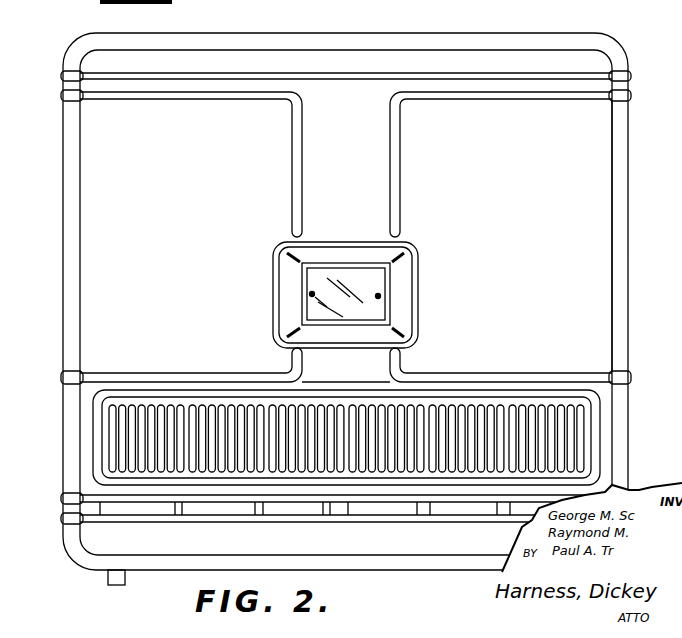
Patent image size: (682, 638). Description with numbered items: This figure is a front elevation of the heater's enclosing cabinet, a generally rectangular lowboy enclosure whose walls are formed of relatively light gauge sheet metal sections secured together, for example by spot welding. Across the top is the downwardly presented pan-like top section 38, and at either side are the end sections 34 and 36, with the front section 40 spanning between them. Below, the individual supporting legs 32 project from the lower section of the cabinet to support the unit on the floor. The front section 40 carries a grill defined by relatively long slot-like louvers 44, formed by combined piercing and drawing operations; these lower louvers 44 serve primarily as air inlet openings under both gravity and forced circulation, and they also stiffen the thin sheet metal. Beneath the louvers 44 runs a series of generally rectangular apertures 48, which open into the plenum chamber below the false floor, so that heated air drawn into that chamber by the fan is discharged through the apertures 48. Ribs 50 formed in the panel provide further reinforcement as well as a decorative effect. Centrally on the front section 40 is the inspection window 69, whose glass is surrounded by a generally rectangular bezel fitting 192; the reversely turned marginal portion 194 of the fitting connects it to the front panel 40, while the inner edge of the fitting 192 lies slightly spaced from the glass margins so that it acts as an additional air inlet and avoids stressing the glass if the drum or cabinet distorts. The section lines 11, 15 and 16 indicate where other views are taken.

The section line 11- 11 is at (268, 297).
The section line 15- 15 is at (200, 22).
The section line 16- 16 is at (100, 190).
The supporting leg 32 is at (118, 578).
The end section 34 is at (630, 213).
The end section 36 is at (63, 278).
The top section 38 is at (358, 33).
The front section 40 is at (170, 315).
The louver 44 is at (314, 396).
The aperture 48 is at (312, 506).
The rib 50 is at (302, 143).
The inspection window 69 is at (372, 290).
The bezel fitting 192 is at (288, 262).
The reversely turned marginal portion 194 is at (278, 343).